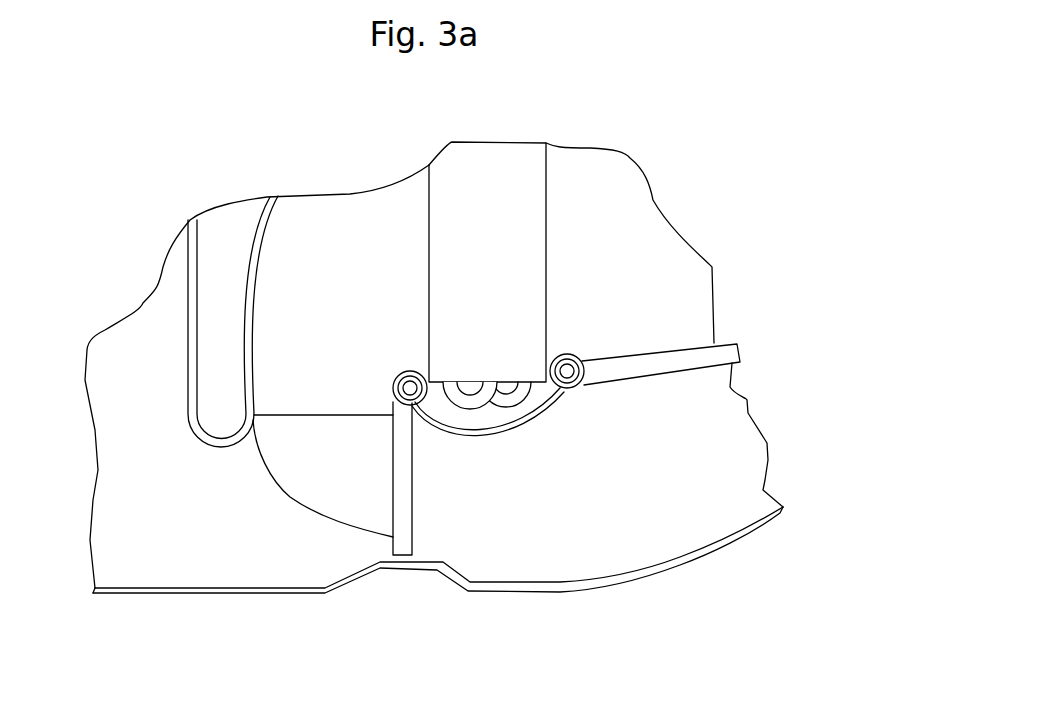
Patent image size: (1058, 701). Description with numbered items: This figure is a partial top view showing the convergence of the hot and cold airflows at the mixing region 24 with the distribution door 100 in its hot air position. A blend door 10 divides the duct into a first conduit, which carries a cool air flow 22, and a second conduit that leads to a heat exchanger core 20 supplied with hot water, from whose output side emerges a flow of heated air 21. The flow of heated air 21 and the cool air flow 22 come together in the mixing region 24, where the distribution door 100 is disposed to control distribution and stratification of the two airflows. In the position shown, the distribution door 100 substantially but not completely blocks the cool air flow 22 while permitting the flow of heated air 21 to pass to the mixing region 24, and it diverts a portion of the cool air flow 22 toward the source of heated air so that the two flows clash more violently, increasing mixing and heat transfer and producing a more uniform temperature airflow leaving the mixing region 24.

The blend door 10 is at (728, 345).
The heat exchanger core 20 is at (504, 160).
The flow of heated air 21 is at (393, 245).
The cool air flow 22 is at (553, 486).
The mixing region 24 is at (230, 559).
The distribution door 100 is at (414, 487).